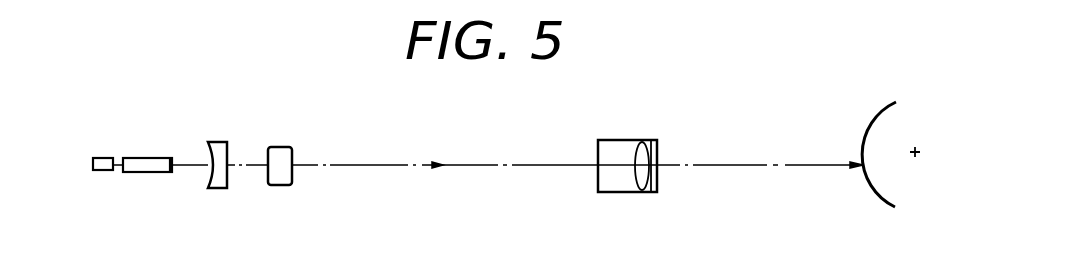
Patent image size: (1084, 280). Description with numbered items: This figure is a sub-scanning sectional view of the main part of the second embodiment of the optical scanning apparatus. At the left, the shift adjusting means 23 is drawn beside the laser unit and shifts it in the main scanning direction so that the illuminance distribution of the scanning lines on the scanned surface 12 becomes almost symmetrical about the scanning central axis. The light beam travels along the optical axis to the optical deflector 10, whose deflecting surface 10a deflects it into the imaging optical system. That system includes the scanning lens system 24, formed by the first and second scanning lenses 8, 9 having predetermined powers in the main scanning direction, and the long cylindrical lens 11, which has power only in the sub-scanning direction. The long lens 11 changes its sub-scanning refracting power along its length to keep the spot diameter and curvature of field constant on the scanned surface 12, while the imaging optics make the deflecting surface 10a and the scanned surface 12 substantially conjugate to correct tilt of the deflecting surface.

The shift adjusting means 23 is at (102, 173).
The optical deflector 10 is at (143, 173).
The deflecting surface 10a is at (172, 173).
The first scanning lens 8 is at (217, 189).
The second scanning lens 9 is at (280, 192).
The scanning lens system 24 is at (248, 210).
The long cylindrical lens 11 is at (626, 193).
The scanned surface 12 is at (878, 197).